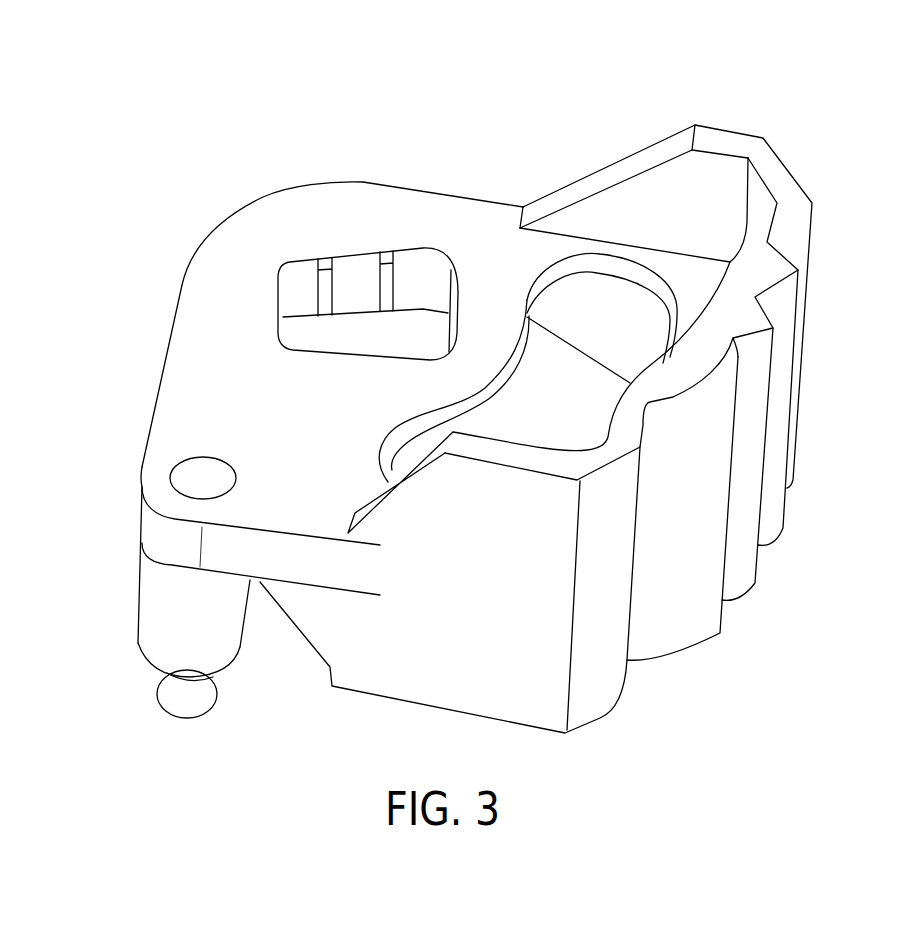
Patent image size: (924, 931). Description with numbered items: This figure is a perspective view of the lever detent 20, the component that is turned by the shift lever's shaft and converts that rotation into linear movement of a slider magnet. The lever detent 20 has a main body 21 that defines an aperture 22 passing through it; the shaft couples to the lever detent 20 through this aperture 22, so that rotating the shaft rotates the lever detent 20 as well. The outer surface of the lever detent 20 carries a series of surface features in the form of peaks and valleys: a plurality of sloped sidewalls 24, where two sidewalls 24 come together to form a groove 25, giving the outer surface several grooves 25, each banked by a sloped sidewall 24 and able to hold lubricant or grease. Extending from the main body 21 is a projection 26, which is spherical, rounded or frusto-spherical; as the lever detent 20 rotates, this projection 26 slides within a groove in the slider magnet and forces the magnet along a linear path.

The lever detent 20 is at (503, 393).
The main body 21 is at (190, 383).
The aperture 22 is at (395, 333).
The sloped sidewall 24 is at (770, 530).
The groove 25 is at (792, 246).
The projection 26 is at (181, 701).